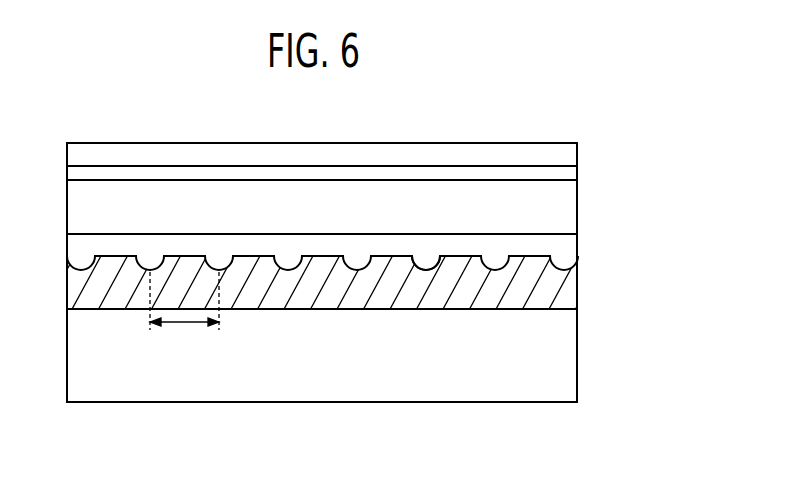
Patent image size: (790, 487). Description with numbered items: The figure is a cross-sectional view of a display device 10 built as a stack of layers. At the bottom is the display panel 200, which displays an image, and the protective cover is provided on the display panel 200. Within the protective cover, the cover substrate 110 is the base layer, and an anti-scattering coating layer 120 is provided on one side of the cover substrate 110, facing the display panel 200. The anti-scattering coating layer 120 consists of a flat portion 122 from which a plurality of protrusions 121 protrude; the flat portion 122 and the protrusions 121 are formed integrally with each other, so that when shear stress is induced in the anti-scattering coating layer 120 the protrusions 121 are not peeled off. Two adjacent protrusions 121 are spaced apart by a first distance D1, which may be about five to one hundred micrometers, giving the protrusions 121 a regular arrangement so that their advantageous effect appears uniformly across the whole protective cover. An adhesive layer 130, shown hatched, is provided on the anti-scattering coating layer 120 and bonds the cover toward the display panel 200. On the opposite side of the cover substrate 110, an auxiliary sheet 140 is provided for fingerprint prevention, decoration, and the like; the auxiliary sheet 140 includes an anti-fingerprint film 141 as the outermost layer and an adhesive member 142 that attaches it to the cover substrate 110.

The display device 10 is at (591, 97).
The cover substrate 110 is at (563, 210).
The anti-scattering coating layer 120 is at (560, 245).
The protrusion 121 is at (422, 262).
The flat portion 122 is at (395, 257).
The adhesive layer 130 is at (565, 297).
The auxiliary sheet 140 is at (652, 132).
The anti-fingerprint film 141 is at (562, 151).
The adhesive member 142 is at (563, 172).
The display panel 200 is at (560, 366).
The first distance D1 is at (184, 313).